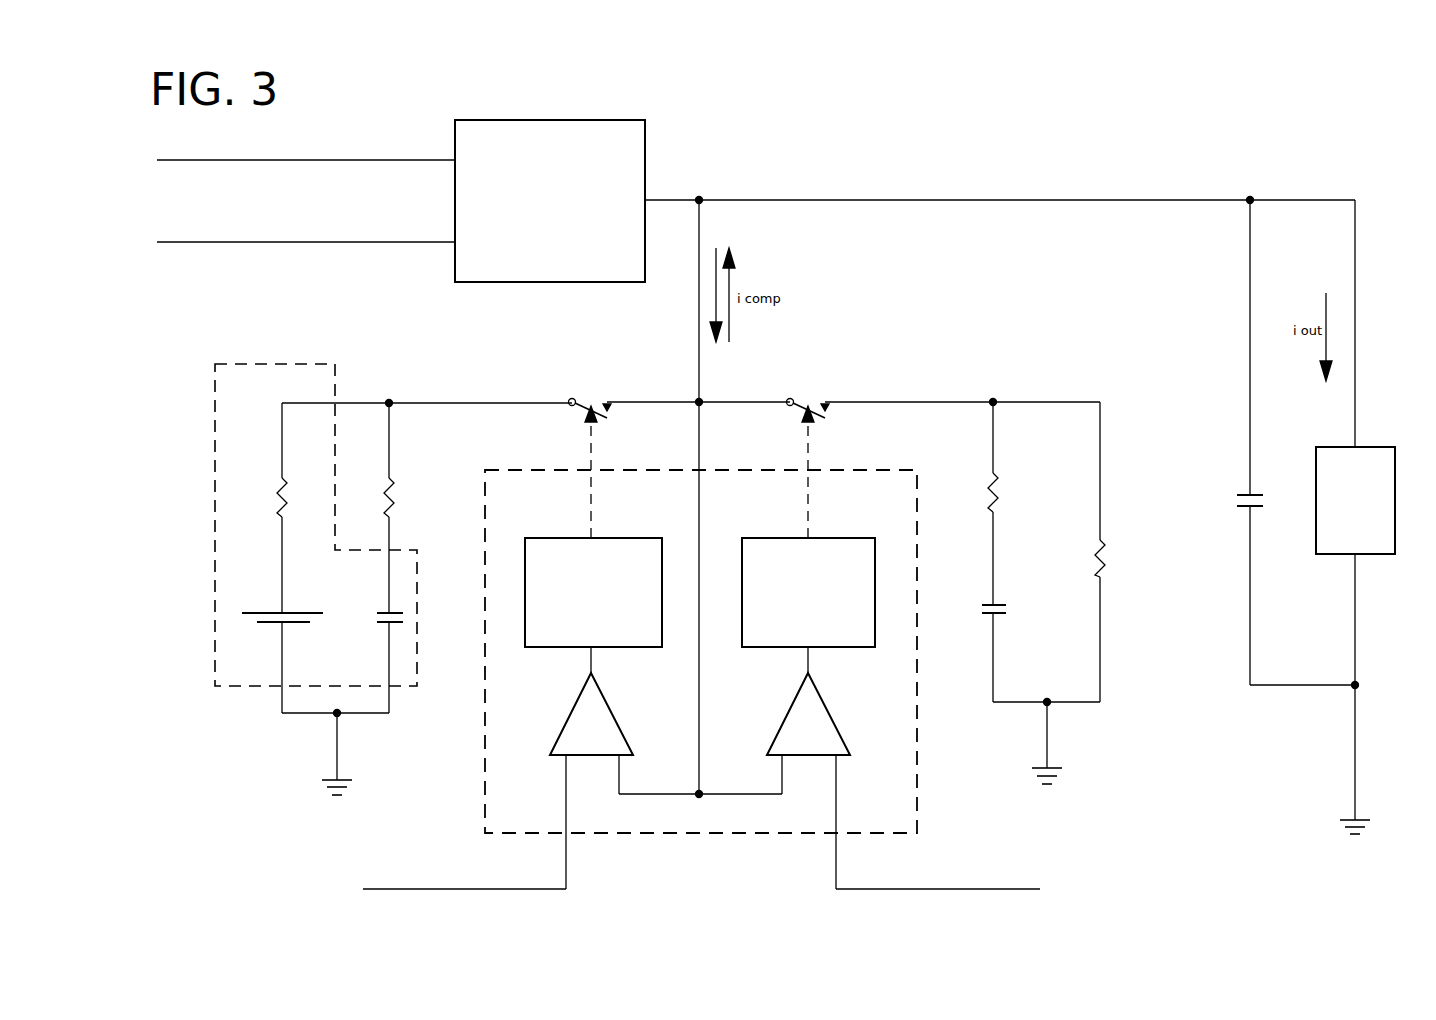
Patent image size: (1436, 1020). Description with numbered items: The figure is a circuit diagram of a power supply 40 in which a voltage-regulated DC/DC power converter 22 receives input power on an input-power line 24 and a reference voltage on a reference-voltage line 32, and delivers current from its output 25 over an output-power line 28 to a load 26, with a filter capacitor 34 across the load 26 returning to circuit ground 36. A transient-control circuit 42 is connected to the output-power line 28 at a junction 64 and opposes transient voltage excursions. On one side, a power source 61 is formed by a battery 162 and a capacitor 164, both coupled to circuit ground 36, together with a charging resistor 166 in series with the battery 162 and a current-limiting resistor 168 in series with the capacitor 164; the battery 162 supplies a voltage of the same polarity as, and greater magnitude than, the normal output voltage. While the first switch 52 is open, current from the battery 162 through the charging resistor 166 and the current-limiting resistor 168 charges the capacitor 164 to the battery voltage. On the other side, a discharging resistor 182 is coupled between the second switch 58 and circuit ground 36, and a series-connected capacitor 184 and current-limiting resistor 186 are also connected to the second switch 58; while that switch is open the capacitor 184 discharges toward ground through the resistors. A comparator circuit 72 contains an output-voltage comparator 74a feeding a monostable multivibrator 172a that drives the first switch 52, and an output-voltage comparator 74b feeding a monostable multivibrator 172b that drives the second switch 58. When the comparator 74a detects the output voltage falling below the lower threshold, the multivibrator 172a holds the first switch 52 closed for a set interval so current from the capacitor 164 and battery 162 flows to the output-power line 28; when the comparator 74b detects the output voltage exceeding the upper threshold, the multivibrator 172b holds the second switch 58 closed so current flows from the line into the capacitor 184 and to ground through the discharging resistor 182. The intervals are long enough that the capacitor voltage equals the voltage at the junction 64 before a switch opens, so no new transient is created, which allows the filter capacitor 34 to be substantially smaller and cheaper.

The power supply 40 is at (398, 145).
The DC/DC power converter 22 is at (488, 154).
The input-power line 24 is at (210, 163).
The reference-voltage line 32 is at (210, 244).
The output 25 is at (645, 200).
The junction 64 is at (699, 402).
The first switch 52 is at (584, 403).
The second switch 58 is at (812, 403).
The power source 61 is at (226, 686).
The charging resistor 166 is at (278, 494).
The current-limiting resistor 168 is at (392, 494).
The battery 162 is at (258, 622).
The capacitor 164 is at (378, 620).
The circuit ground 36 is at (336, 778).
The comparator circuit 72 is at (700, 835).
The monostable multivibrator 172a is at (573, 567).
The monostable multivibrator 172b is at (790, 567).
The output-voltage comparator 74a is at (586, 720).
The output-voltage comparator 74b is at (814, 727).
The current-limiting resistor 186 is at (990, 490).
The capacitor 184 is at (988, 610).
The discharging resistor 182 is at (1095, 554).
The output-power line 28 is at (1331, 200).
The filter capacitor 34 is at (1242, 501).
The load 26 is at (1348, 483).
The transient-control circuit 42 is at (246, 866).